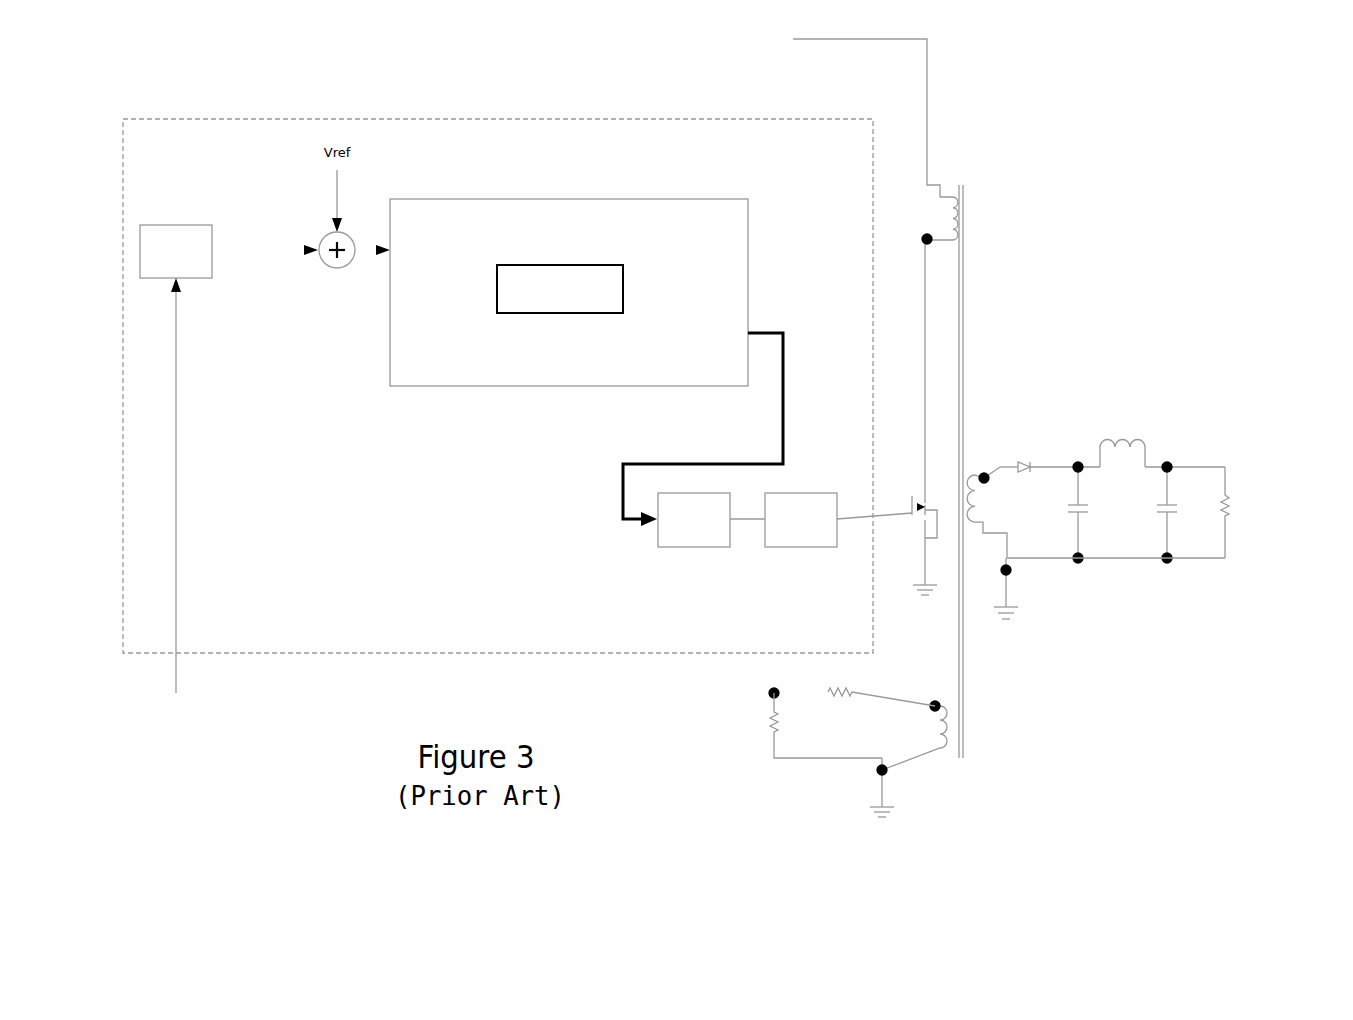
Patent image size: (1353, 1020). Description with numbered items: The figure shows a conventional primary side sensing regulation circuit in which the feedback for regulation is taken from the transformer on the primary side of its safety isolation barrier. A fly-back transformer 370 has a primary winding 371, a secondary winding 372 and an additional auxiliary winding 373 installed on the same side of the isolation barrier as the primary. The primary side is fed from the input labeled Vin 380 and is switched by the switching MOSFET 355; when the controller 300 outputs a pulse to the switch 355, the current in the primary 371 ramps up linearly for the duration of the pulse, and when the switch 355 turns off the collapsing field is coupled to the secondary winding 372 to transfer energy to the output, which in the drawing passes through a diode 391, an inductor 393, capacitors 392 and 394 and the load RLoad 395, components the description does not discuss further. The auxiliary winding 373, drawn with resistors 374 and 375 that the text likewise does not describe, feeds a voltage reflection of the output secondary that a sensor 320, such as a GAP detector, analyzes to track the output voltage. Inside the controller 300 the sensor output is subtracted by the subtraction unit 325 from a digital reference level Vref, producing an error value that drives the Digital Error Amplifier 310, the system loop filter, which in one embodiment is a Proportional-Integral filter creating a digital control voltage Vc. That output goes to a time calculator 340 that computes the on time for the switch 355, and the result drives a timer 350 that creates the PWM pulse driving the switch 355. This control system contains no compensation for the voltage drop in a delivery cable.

The controller 300 is at (422, 112).
The Digital Error Amplifier 310 is at (512, 190).
The sensor 320 is at (176, 218).
The subtraction unit 325 is at (320, 225).
The time calculator 340 is at (680, 553).
The timer 350 is at (787, 553).
The switching MOSFET 355 is at (908, 535).
The fly-back transformer 370 is at (968, 345).
The primary winding 371 is at (943, 180).
The secondary winding 372 is at (977, 458).
The auxiliary winding 373 is at (945, 767).
The resistor 374 is at (837, 708).
The resistor 375 is at (785, 720).
The input voltage Vin 380 is at (825, 23).
The rectifier diode 391 is at (1025, 452).
The output capacitor 392 is at (1097, 515).
The output inductor 393 is at (1123, 433).
The output capacitor 394 is at (1183, 512).
The load resistor RLoad 395 is at (1235, 500).